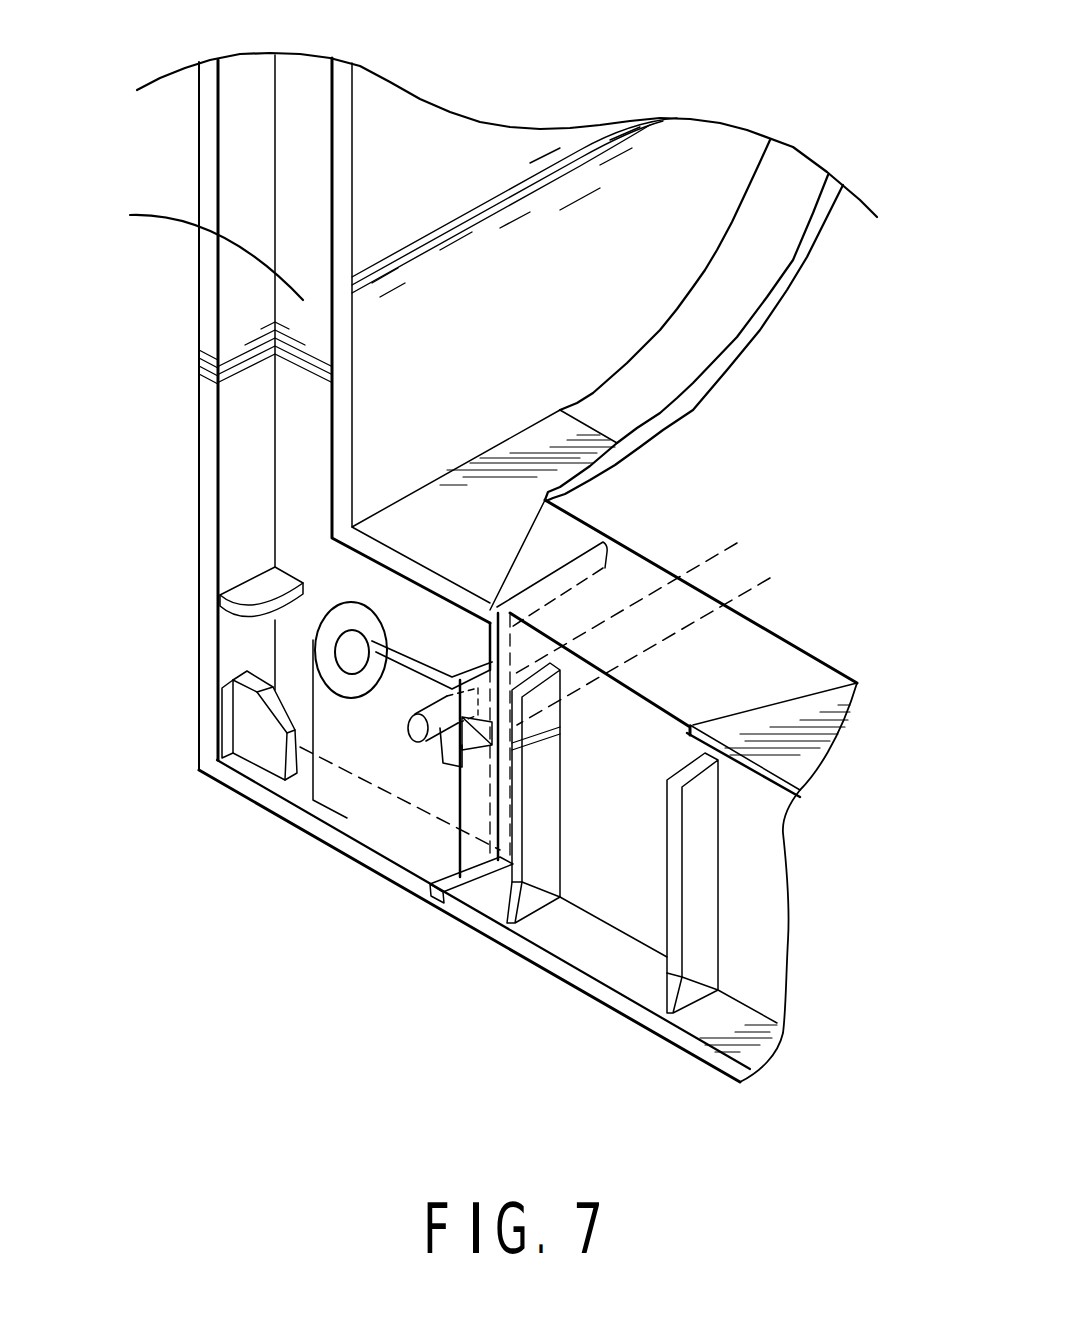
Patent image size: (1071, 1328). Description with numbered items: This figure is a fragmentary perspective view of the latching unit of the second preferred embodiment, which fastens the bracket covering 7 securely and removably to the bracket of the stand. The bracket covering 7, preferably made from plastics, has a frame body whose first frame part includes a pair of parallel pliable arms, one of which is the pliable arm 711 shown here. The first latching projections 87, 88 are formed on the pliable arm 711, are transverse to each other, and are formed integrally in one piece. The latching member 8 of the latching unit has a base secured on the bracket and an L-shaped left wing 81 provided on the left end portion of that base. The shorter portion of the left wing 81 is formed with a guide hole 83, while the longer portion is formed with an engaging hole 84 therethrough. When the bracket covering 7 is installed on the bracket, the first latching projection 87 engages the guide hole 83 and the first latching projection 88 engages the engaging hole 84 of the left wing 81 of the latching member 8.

The bracket covering 7 is at (162, 380).
The pliable arm 711 is at (303, 300).
The latching member 8 is at (798, 638).
The left wing 81 is at (437, 643).
The guide hole 83 is at (460, 757).
The engaging hole 84 is at (415, 735).
The first latching projection 87 is at (669, 639).
The first latching projection 88 is at (649, 592).